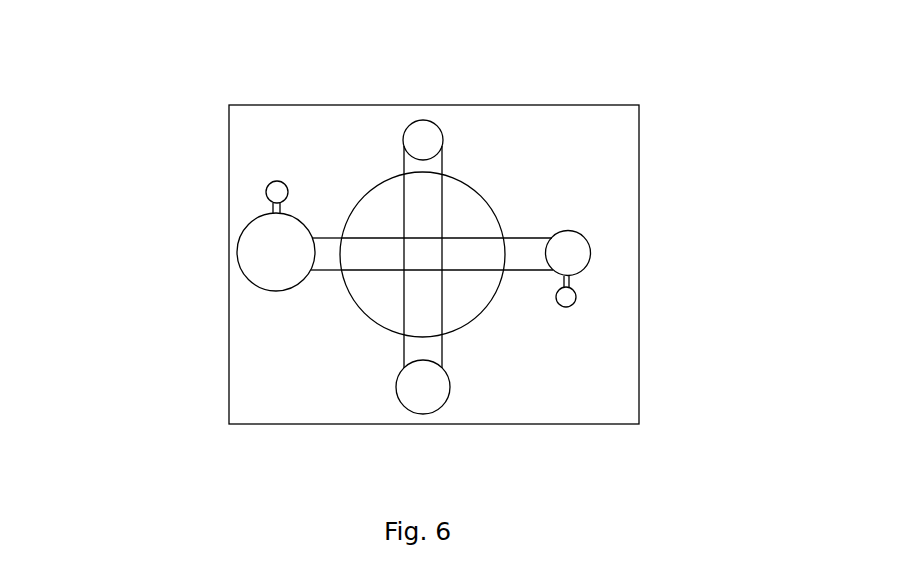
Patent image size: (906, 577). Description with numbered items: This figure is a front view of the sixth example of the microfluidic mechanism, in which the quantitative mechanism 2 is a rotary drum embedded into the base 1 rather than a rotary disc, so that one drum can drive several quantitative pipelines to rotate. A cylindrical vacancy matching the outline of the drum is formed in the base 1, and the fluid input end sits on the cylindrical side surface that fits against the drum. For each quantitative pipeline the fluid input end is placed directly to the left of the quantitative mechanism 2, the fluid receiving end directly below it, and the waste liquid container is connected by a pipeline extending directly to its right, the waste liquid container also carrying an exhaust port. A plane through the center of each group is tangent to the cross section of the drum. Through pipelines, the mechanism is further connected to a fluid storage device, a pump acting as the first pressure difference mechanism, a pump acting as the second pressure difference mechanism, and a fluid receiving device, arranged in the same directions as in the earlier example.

The base 1 is at (439, 224).
The quantitative mechanism 2 is at (456, 180).